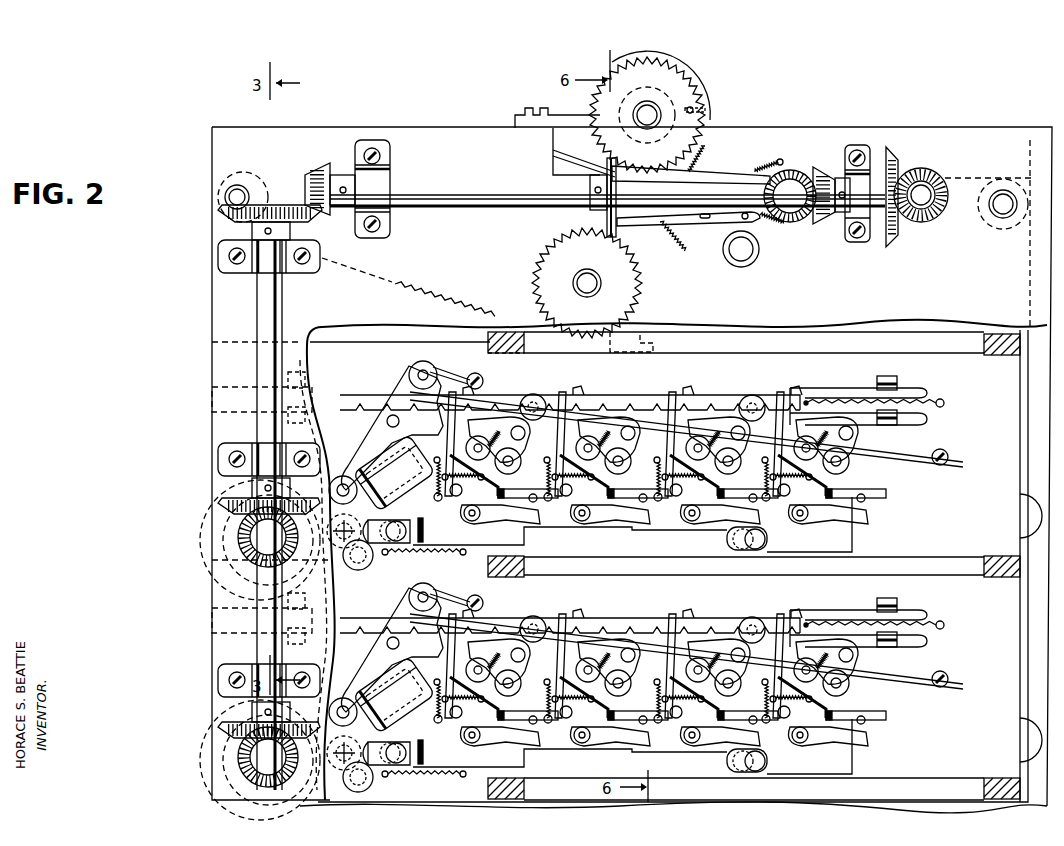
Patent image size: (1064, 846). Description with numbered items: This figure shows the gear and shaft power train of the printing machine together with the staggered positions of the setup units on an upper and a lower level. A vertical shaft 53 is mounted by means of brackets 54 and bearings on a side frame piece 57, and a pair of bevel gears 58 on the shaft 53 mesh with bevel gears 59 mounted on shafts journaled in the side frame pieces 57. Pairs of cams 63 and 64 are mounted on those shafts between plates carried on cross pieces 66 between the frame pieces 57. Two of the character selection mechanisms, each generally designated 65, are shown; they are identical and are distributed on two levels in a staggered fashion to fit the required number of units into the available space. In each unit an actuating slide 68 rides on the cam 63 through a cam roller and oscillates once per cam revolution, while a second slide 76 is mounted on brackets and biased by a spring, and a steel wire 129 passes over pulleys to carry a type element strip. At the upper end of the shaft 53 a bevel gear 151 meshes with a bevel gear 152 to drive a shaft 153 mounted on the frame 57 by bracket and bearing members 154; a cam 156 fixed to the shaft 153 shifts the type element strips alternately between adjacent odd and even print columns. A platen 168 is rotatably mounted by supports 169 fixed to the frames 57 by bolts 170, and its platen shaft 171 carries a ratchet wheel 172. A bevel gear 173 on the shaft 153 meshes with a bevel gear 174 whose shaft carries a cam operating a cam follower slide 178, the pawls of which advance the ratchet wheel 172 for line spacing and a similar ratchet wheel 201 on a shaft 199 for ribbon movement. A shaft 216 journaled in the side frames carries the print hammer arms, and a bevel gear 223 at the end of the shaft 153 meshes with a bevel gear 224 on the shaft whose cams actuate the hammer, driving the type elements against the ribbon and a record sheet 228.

The vertical shaft 53 is at (275, 303).
The brackets 54 is at (218, 260).
The side frame piece 57 is at (212, 297).
The bevel gears 58 is at (225, 505).
The bevel gears 59 is at (245, 537).
The cam 63 is at (206, 533).
The cam 64 is at (230, 570).
The character selection unit 65 is at (880, 500).
The cross pieces 66 is at (524, 354).
The actuating slide 68 is at (655, 543).
The second slide 76 is at (664, 396).
The steel wire 129 is at (905, 440).
The bevel gear 151 is at (335, 210).
The bevel gear 152 is at (322, 164).
The shaft 153 is at (460, 196).
The bracket and bearing members 154 is at (380, 170).
The cam 156 is at (598, 215).
The platen 168 is at (700, 90).
The supports 169 is at (578, 124).
The bolts 170 is at (537, 108).
The platen shaft 171 is at (640, 118).
The ratchet wheel 172 is at (684, 77).
The bevel gear 173 is at (820, 222).
The bevel gear 174 is at (797, 170).
The cam follower slide 178 is at (728, 178).
The shaft 199 is at (590, 284).
The ratchet wheel 201 is at (540, 283).
The shaft 216 is at (752, 259).
The bevel gear 223 is at (893, 238).
The bevel gear 224 is at (925, 220).
The record sheet 228 is at (560, 160).